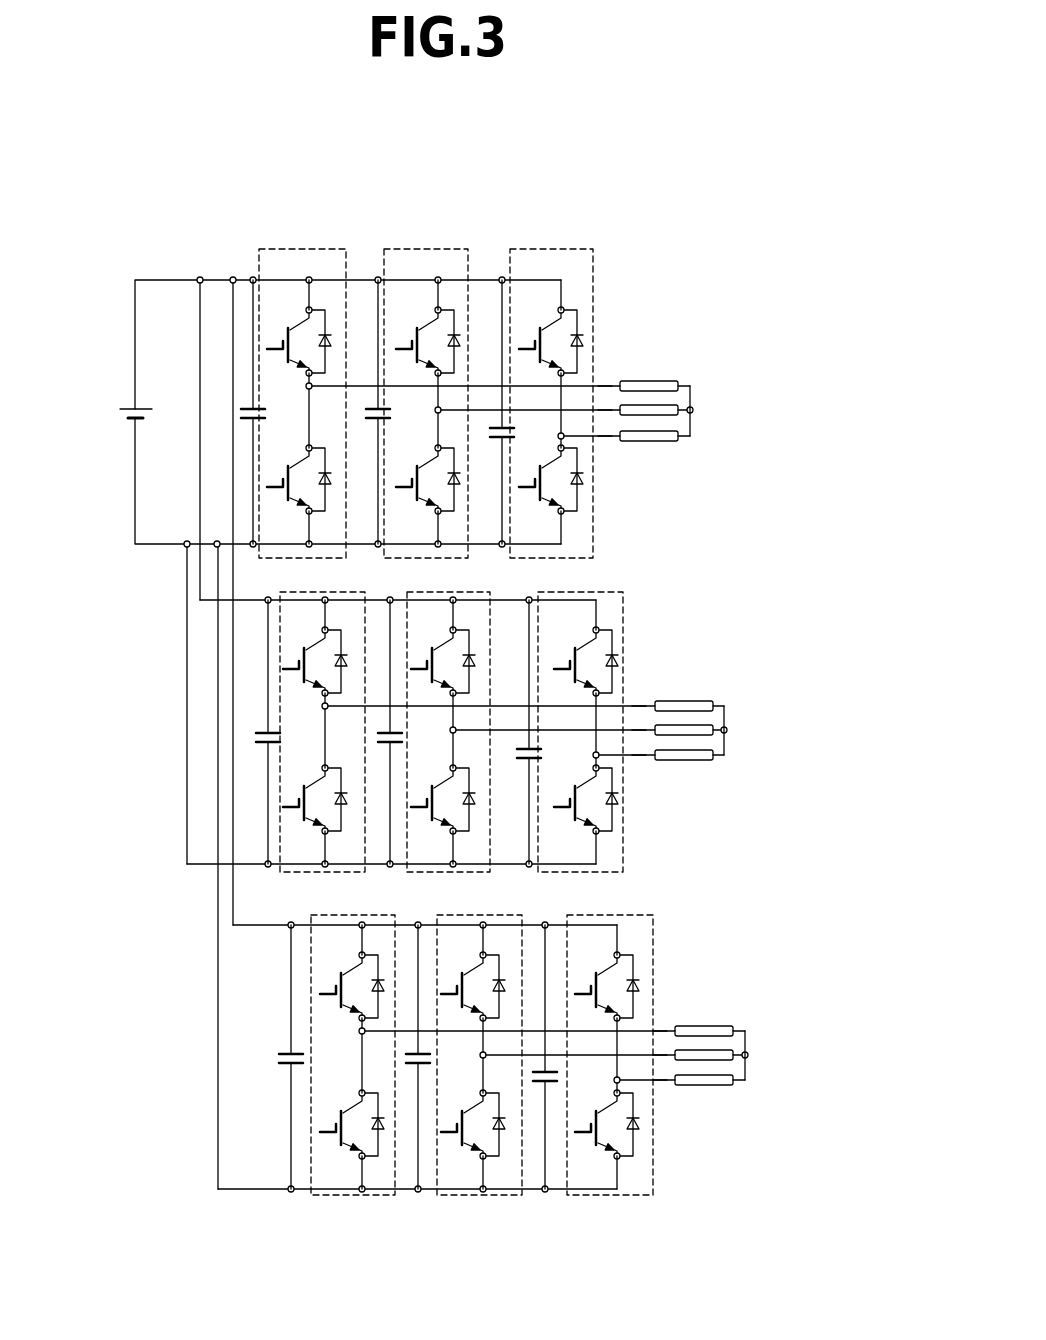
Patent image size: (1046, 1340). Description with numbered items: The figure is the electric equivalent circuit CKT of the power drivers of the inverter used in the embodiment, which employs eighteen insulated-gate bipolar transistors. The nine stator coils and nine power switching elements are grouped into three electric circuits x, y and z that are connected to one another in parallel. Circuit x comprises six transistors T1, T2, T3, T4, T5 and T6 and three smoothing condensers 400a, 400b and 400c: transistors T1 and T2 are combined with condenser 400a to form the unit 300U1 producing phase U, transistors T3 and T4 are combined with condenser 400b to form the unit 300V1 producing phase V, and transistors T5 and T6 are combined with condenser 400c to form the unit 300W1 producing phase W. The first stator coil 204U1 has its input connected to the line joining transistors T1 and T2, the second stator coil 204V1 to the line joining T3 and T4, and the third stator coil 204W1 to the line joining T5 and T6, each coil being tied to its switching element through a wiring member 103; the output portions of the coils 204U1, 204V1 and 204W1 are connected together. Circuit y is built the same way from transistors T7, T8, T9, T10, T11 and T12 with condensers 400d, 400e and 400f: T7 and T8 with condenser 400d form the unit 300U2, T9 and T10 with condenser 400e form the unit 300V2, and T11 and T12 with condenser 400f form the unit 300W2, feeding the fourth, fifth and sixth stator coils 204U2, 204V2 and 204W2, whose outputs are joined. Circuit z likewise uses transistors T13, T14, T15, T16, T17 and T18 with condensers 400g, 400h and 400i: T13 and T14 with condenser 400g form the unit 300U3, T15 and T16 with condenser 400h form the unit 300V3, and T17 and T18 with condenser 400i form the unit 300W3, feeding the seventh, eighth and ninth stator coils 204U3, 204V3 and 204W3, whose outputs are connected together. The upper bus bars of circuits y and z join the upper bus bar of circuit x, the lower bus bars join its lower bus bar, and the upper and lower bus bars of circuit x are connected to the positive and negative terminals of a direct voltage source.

The electric equivalent circuit CKT is at (760, 133).
The circuit X x is at (620, 312).
The circuit Y y is at (663, 622).
The circuit Z z is at (692, 953).
The wiring member 103 is at (605, 407).
The unit 300U1 is at (205, 374).
The unit 300V1 is at (390, 363).
The unit 300W1 is at (568, 371).
The unit 300U2 is at (232, 718).
The unit 300V2 is at (281, 718).
The unit 300W2 is at (406, 713).
The unit 300U3 is at (261, 1043).
The unit 300V3 is at (315, 1043).
The unit 300W3 is at (437, 1043).
The transistor T1 is at (297, 322).
The transistor T2 is at (297, 460).
The transistor T3 is at (426, 460).
The transistor T4 is at (426, 325).
The transistor T5 is at (549, 322).
The transistor T6 is at (549, 460).
The transistor T7 is at (313, 642).
The transistor T8 is at (313, 780).
The transistor T9 is at (441, 642).
The transistor T10 is at (441, 780).
The transistor T11 is at (584, 642).
The transistor T12 is at (584, 780).
The transistor T13 is at (350, 967).
The transistor T14 is at (350, 1105).
The transistor T15 is at (471, 967).
The transistor T16 is at (471, 1105).
The transistor T17 is at (605, 967).
The transistor T18 is at (605, 1105).
The smoothing condenser 400a is at (248, 405).
The smoothing condenser 400b is at (372, 408).
The smoothing condenser 400c is at (498, 427).
The smoothing condenser 400d is at (262, 730).
The smoothing condenser 400e is at (385, 730).
The smoothing condenser 400f is at (523, 746).
The smoothing condenser 400g is at (285, 1052).
The smoothing condenser 400h is at (413, 1052).
The smoothing condenser 400i is at (540, 1072).
The first stator coil 204U1 is at (665, 383).
The second stator coil 204V1 is at (663, 410).
The third stator coil 204W1 is at (670, 438).
The fourth stator coil 204U2 is at (692, 703).
The fifth stator coil 204V2 is at (690, 727).
The sixth stator coil 204W2 is at (708, 760).
The seventh stator coil 204U3 is at (715, 1030).
The eighth stator coil 204V3 is at (715, 1053).
The ninth stator coil 204W3 is at (718, 1088).